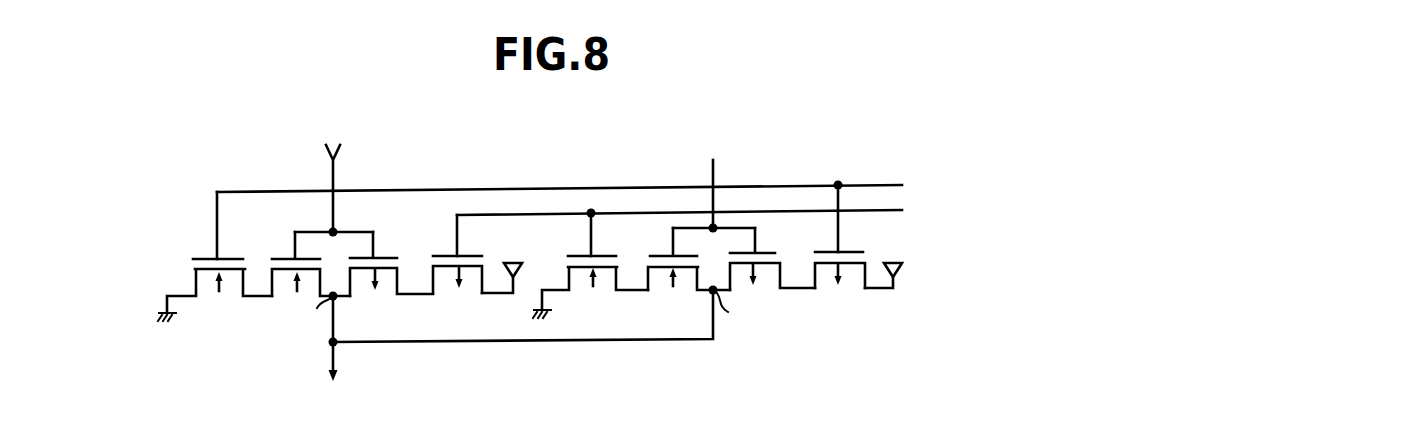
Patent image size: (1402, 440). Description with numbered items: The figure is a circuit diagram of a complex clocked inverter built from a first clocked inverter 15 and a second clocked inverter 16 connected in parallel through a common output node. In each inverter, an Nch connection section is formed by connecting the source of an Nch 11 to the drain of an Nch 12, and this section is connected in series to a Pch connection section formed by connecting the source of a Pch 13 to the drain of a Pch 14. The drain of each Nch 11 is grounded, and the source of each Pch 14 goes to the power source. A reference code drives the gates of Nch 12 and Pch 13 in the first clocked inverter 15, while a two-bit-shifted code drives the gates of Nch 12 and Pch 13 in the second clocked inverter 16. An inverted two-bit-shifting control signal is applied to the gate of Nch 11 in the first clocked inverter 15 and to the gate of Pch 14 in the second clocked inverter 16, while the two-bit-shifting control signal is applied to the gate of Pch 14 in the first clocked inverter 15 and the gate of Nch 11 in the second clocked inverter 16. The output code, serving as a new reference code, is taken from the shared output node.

The Nch 11 is at (199, 283).
The Nch 12 is at (279, 283).
The Pch 13 is at (395, 282).
The Pch 14 is at (479, 281).
The first clocked inverter 15 is at (250, 167).
The second clocked inverter 16 is at (820, 162).